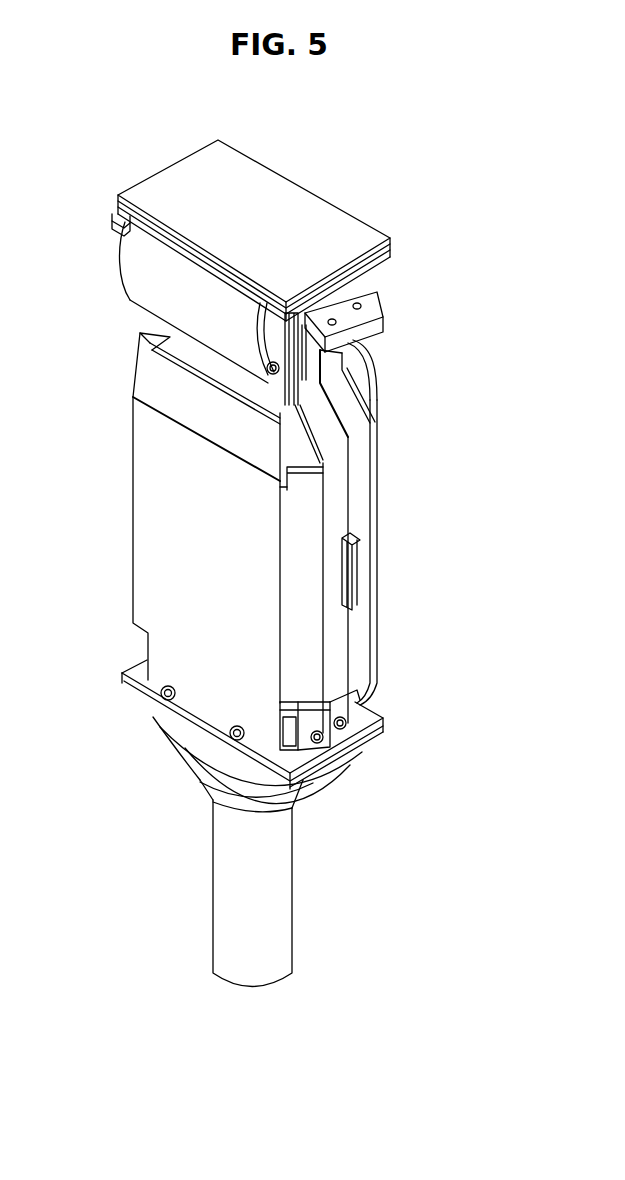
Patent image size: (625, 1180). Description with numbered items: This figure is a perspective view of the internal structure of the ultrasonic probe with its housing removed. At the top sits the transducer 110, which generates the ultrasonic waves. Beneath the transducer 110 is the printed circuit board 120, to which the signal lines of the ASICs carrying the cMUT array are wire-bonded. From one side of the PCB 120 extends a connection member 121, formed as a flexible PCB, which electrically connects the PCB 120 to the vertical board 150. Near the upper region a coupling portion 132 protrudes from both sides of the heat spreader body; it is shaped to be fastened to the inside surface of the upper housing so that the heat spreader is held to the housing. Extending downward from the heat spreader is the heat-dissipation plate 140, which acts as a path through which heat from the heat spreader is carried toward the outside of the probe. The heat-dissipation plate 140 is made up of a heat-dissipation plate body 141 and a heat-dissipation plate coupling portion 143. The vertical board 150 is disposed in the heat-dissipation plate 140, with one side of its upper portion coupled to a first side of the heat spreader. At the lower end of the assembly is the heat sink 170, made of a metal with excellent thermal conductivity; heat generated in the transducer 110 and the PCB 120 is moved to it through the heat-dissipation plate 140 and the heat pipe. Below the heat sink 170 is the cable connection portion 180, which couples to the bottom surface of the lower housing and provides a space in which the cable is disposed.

The transducer 110 is at (342, 240).
The printed circuit board 120 is at (112, 225).
The connection member 121 is at (130, 275).
The coupling portion 132 is at (357, 298).
The heat-dissipation plate 140 is at (470, 402).
The heat-dissipation plate body 141 is at (367, 510).
The heat-dissipation plate coupling portion 143 is at (310, 375).
The vertical board 150 is at (292, 443).
The heat sink 170 is at (183, 727).
The cable connection portion 180 is at (280, 910).